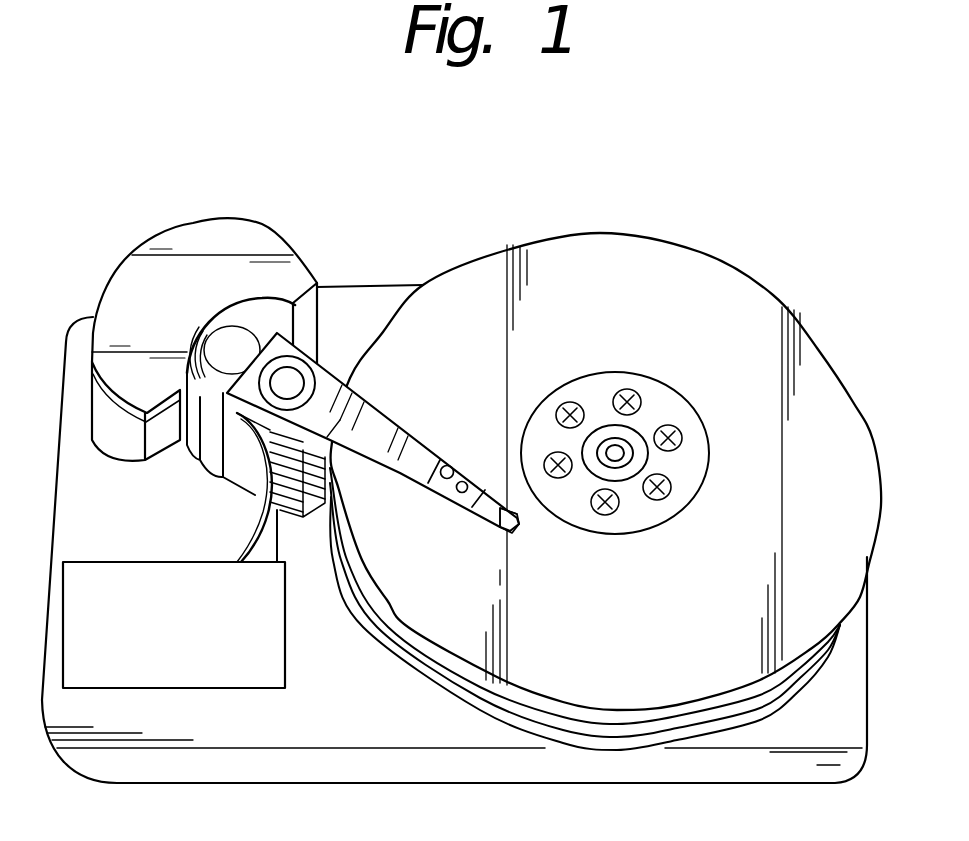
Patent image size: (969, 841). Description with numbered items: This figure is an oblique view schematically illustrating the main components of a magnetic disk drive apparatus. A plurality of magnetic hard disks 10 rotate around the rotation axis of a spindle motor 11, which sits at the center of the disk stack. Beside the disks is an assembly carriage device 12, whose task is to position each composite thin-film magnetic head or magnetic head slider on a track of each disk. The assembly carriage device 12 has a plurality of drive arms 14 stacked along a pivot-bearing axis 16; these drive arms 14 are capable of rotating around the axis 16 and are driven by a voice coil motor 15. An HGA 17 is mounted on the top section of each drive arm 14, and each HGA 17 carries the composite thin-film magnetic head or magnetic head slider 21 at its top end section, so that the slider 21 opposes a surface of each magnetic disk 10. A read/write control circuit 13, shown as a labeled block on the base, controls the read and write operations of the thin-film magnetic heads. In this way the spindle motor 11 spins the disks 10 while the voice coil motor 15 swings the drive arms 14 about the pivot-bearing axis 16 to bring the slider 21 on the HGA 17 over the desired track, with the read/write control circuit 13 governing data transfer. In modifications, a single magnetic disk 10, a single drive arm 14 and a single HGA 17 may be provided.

The magnetic hard disks 10 is at (773, 285).
The spindle motor 11 is at (630, 452).
The assembly carriage device 12 is at (230, 243).
The read/write control circuit 13 is at (227, 688).
The drive arms 14 is at (387, 421).
The voice coil motor 15 is at (193, 430).
The pivot-bearing axis 16 is at (288, 383).
The HGA 17 is at (497, 511).
The magnetic head slider 21 is at (502, 528).